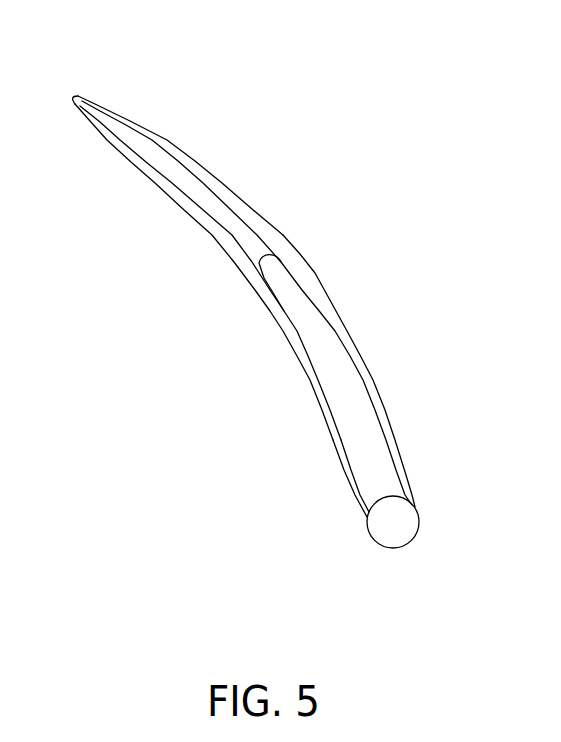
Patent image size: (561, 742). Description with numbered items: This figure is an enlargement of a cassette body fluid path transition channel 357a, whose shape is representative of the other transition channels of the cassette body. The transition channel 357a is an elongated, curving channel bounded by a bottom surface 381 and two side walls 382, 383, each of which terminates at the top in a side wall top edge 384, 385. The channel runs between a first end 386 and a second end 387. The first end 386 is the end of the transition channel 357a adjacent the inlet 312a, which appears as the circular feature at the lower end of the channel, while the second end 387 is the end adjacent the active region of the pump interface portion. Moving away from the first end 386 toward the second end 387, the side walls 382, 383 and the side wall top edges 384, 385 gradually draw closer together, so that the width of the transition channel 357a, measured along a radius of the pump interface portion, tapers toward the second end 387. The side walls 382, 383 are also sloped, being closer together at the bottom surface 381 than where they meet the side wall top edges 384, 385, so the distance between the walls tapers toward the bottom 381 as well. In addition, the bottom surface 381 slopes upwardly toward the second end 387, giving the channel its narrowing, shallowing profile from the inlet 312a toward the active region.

The cassette body fluid path transition channel 357a is at (364, 203).
The bottom surface 381 is at (204, 192).
The side wall 382 is at (214, 229).
The side wall 383 is at (253, 208).
The side wall top edge 384 is at (161, 186).
The side wall top edge 385 is at (182, 150).
The first end 386 is at (396, 548).
The second end 387 is at (73, 99).
The inlet 312a is at (410, 524).